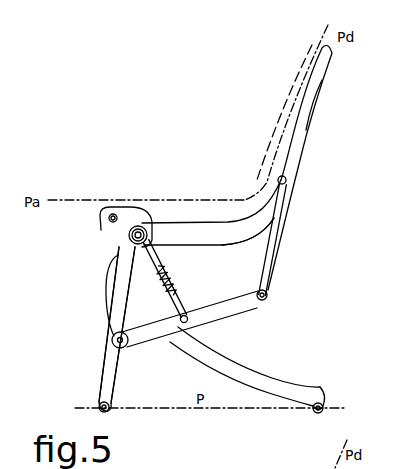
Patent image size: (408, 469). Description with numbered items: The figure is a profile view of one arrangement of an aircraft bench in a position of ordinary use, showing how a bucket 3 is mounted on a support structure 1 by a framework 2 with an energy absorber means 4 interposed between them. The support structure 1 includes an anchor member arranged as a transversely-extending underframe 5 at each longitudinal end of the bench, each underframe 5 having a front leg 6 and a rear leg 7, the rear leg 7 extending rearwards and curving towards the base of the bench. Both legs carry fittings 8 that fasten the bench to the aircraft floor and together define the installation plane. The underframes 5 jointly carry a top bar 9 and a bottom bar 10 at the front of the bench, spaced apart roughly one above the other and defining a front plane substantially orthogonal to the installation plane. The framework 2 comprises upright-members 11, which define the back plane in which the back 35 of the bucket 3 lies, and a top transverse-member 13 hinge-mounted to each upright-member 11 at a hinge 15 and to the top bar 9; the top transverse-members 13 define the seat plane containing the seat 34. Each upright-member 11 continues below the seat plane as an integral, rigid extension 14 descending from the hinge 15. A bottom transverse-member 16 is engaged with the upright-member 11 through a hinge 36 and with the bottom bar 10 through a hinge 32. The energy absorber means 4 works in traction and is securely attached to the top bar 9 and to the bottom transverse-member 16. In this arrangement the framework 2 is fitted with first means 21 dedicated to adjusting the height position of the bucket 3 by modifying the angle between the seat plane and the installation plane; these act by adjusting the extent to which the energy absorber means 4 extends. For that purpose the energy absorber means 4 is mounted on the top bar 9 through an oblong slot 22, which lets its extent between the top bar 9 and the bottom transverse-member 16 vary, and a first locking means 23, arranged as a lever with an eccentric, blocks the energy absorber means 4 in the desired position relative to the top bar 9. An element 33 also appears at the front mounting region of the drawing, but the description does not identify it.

The support structure 1 is at (87, 318).
The framework 2 is at (298, 296).
The bucket 3 is at (253, 109).
The energy absorber means 4 is at (172, 280).
The underframe 5 is at (306, 368).
The front leg 6 is at (101, 384).
The rear leg 7 is at (270, 375).
The fittings 8 is at (109, 408).
The top bar 9 is at (172, 223).
The bottom bar 10 is at (130, 348).
The upright-member 11 is at (313, 119).
The top transverse-member 13 is at (245, 242).
The extension 14 is at (283, 235).
The hinge 15 is at (292, 173).
The bottom transverse-member 16 is at (237, 312).
The first means 21 is at (100, 252).
The oblong slot 22 is at (110, 207).
The first locking means 23 is at (108, 286).
The hinge 32 is at (111, 335).
The seat pivot 33 is at (138, 226).
The seat 34 is at (109, 219).
The back 35 is at (302, 77).
The hinge 36 is at (263, 300).